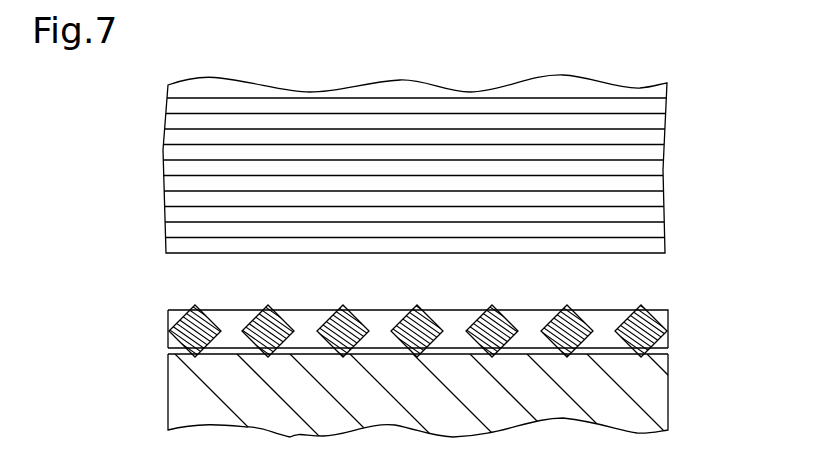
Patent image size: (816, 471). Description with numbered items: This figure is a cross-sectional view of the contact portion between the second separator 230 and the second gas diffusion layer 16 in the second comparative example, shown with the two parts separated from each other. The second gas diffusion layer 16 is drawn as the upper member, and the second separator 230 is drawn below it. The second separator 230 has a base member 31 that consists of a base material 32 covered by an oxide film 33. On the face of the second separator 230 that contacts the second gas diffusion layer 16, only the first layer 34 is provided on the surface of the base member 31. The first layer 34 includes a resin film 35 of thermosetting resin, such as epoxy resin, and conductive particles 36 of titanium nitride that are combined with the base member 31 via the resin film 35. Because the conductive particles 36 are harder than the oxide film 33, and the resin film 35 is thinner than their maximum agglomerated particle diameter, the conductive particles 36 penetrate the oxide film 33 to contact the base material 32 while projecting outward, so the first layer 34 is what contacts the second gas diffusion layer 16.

The second gas diffusion layer 16 is at (118, 163).
The second separator 230 is at (407, 241).
The base member 31 is at (466, 383).
The base material 32 is at (661, 407).
The oxide film 33 is at (441, 340).
The first layer 34 is at (420, 241).
The resin film 35 is at (665, 312).
The conductive particles 36 is at (650, 303).